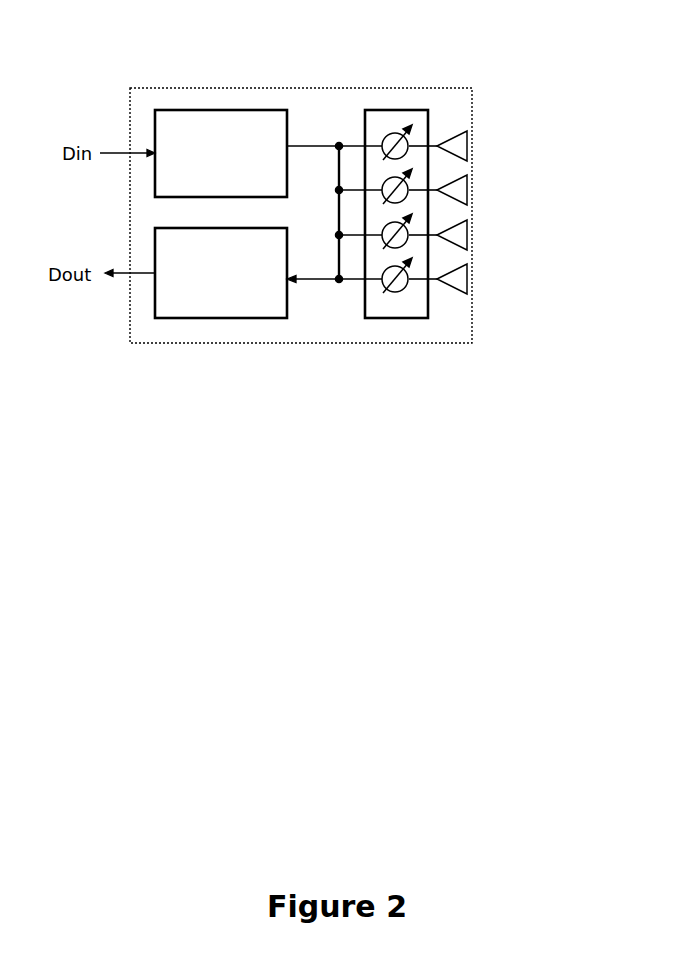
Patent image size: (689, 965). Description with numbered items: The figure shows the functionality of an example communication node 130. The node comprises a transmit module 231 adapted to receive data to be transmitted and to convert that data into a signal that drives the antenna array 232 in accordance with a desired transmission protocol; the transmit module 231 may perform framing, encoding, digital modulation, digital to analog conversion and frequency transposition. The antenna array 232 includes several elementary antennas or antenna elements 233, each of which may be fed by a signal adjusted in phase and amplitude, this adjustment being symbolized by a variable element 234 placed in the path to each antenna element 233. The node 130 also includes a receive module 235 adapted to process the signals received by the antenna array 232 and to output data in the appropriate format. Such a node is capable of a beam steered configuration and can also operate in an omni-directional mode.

The transceiver module 130 is at (301, 182).
The transmit module 231 is at (221, 113).
The antenna array 232 is at (399, 174).
The antenna element 233 is at (486, 232).
The variable element 234 is at (409, 266).
The receive module 235 is at (221, 322).